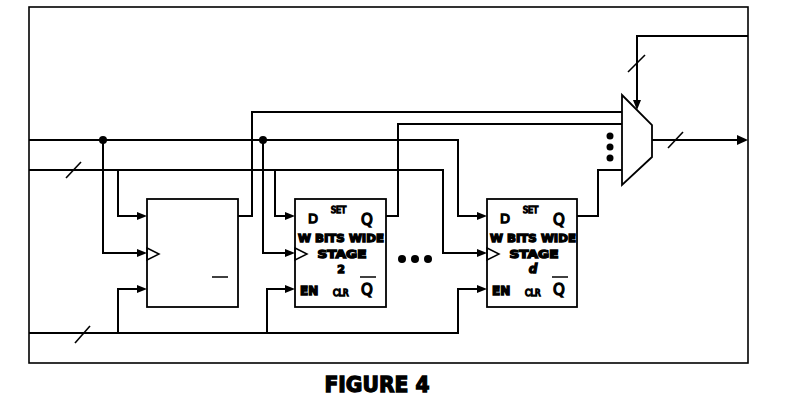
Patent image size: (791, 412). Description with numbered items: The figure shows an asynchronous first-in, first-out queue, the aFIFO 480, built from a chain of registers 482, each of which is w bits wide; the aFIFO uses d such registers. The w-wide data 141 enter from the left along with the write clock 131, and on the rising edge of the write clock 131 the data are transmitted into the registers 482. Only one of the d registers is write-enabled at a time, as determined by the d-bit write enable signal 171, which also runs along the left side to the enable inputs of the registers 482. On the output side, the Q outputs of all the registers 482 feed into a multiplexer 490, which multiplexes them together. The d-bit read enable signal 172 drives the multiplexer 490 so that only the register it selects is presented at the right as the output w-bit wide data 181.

The write clock 131 is at (78, 139).
The w-wide data 141 is at (97, 172).
The d-bit write enable signal 171 is at (50, 333).
The d-bit read enable signal 172 is at (667, 36).
The output w-bit wide data 181 is at (727, 142).
The aFIFO 480 is at (365, 86).
The registers 482 is at (200, 106).
The multiplexer 490 is at (637, 174).